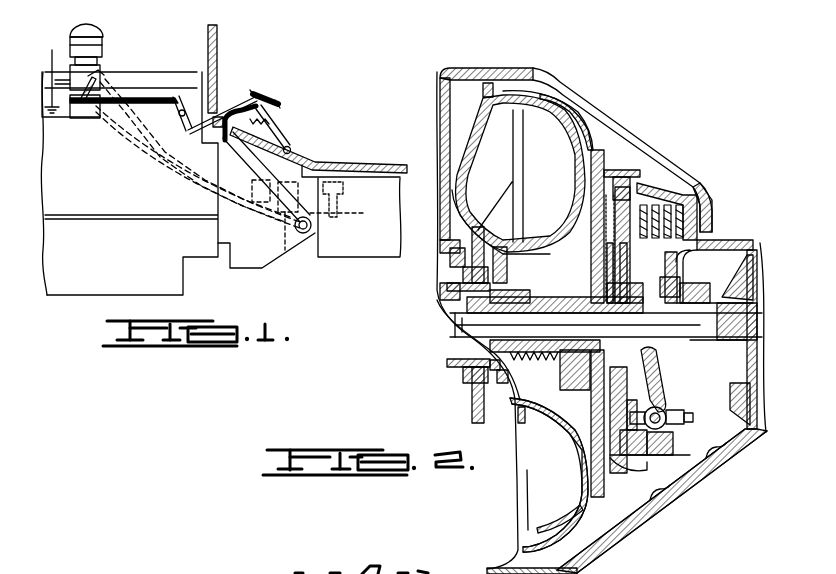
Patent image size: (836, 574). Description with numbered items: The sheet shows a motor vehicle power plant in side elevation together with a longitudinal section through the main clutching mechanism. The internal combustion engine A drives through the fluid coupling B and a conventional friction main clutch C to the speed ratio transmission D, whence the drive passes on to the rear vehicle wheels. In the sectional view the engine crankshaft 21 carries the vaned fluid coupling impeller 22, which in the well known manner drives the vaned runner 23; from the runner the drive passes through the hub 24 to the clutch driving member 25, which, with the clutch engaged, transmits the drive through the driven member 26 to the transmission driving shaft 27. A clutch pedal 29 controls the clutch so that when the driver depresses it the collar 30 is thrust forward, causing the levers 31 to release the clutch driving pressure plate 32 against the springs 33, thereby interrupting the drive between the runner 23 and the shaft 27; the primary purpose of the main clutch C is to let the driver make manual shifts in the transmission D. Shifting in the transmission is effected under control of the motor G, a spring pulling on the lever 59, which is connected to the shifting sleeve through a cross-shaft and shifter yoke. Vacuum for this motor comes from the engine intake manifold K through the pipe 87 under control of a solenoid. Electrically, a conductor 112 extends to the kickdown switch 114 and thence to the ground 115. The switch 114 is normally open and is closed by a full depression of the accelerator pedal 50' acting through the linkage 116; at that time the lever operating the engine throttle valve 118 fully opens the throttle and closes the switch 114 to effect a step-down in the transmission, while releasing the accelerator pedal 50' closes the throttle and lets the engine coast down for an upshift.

In FIG. 1, the conductor 112 is at (52, 50).
In FIG. 1, the kickdown switch 114 is at (73, 78).
In FIG. 1, the pipe 87 is at (102, 75).
In FIG. 1, the internal combustion engine A is at (166, 75).
In FIG. 1, the ground 115 is at (52, 113).
In FIG. 1, the engine throttle valve 118 is at (77, 122).
In FIG. 1, the engine intake manifold K is at (100, 120).
In FIG. 1, the linkage 116 is at (172, 108).
In FIG. 1, the clutch pedal 29 is at (276, 95).
In FIG. 1, the accelerator pedal 50' is at (269, 169).
In FIG. 1, the speed ratio transmission D is at (382, 173).
In FIG. 1, the lever 59 is at (355, 217).
In FIG. 1, the motor G is at (266, 250).
In FIG. 2, the fluid coupling impeller 22 is at (468, 133).
In FIG. 2, the fluid coupling B is at (540, 108).
In FIG. 2, the runner 23 is at (565, 125).
In FIG. 2, the clutch driving member 25 is at (615, 203).
In FIG. 2, the clutch driving pressure plate 32 is at (637, 195).
In FIG. 2, the main clutch C is at (657, 200).
In FIG. 2, the springs 33 is at (697, 193).
In FIG. 2, the driven member 26 is at (627, 262).
In FIG. 2, the collar 30 is at (693, 277).
In FIG. 2, the engine crankshaft 21 is at (447, 288).
In FIG. 2, the hub 24 is at (507, 313).
In FIG. 2, the levers 31 is at (663, 383).
In FIG. 2, the transmission driving shaft 27 is at (723, 345).